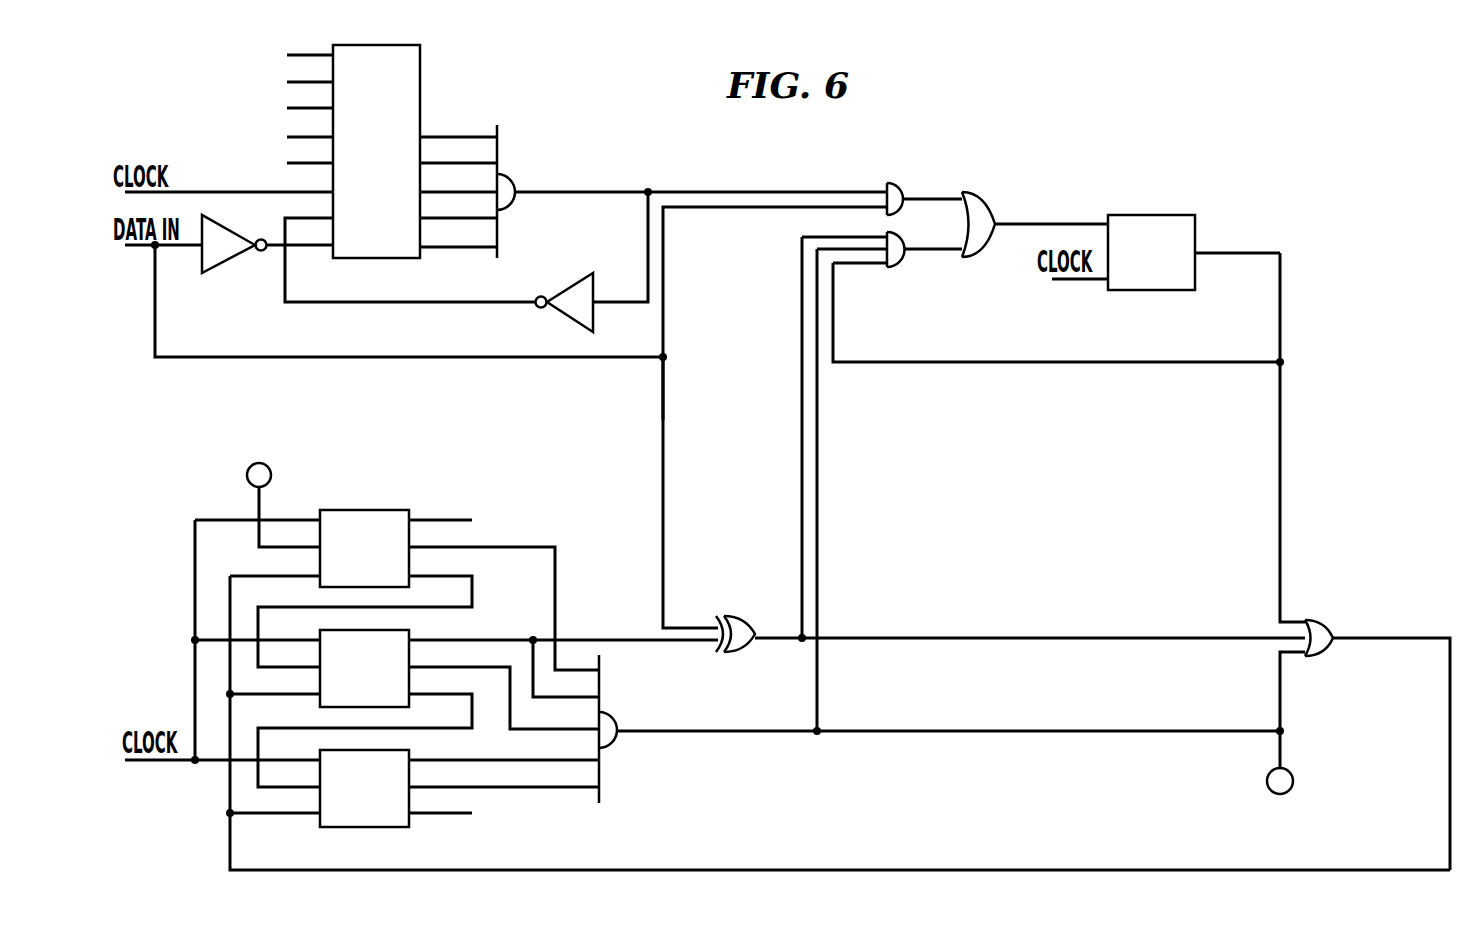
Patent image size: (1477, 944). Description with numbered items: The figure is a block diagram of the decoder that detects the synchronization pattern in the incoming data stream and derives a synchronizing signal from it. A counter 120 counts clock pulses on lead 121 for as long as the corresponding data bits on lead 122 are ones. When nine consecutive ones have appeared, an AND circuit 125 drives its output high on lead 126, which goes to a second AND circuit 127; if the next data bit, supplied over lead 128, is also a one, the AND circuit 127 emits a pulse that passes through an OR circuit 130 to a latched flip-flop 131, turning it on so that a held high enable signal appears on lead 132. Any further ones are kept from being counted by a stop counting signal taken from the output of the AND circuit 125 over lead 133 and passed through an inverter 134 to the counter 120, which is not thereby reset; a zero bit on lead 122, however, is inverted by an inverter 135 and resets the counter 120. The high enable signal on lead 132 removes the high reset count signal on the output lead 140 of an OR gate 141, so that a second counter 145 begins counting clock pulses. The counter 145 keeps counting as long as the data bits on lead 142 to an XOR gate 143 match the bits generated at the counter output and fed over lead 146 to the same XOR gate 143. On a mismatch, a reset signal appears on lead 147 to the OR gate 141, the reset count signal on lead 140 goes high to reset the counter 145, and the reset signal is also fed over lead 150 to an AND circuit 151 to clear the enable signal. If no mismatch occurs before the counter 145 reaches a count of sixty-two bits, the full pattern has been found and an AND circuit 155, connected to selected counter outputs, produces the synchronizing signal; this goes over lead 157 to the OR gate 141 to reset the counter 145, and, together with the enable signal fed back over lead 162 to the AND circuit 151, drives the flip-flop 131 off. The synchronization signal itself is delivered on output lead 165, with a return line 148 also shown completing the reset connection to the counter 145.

The counter 120 is at (420, 68).
The lead 121 is at (193, 190).
The lead 122 is at (131, 248).
The AND circuit 125 is at (512, 183).
The lead 126 is at (697, 190).
The second AND circuit 127 is at (898, 183).
The lead 128 is at (663, 320).
The OR circuit 130 is at (980, 210).
The latched flip-flop 131 is at (1133, 214).
The lead 132 is at (1280, 407).
The lead 133 is at (648, 215).
The inverter 134 is at (568, 288).
The inverter 135 is at (218, 270).
The output lead 140 is at (1400, 636).
The OR gate 141 is at (1320, 620).
The lead 142 is at (663, 409).
The XOR gate 143 is at (735, 618).
The counter 145 is at (392, 494).
The lead 146 is at (595, 638).
The lead 147 is at (985, 636).
The feedback line 148 is at (750, 868).
The lead 150 is at (802, 402).
The AND circuit 151 is at (897, 262).
The AND circuit 155 is at (612, 715).
The lead 157 is at (975, 729).
The lead 162 is at (817, 425).
The lead 165 is at (1282, 750).